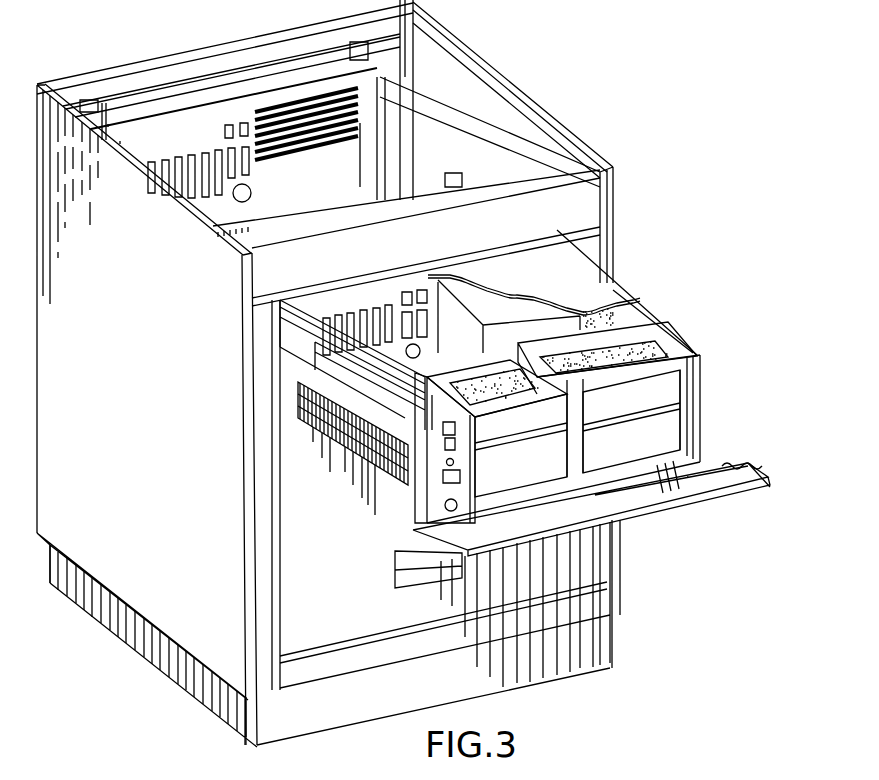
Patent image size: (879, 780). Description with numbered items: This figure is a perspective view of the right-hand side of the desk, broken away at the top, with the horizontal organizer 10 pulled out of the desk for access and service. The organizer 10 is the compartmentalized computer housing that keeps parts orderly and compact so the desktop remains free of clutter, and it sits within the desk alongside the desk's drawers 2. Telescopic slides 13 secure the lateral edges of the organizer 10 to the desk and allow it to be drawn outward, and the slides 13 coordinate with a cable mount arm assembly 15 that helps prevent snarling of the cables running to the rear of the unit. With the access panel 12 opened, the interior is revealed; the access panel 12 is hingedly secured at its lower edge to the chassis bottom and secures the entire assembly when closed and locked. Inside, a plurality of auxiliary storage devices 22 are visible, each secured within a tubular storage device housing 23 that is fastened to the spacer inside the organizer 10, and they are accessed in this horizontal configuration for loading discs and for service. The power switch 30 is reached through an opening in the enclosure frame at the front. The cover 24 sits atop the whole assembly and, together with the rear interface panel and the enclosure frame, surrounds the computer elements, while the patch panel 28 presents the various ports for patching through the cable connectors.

The organizer 10 is at (726, 422).
The access panel 12 is at (703, 503).
The telescopic slides 13 is at (352, 400).
The cable mount arm assembly 15 is at (225, 237).
The auxiliary storage devices 22 is at (693, 373).
The storage device housing 23 is at (545, 415).
The cover 24 is at (597, 302).
The patch panel 28 is at (187, 142).
The power switch 30 is at (452, 440).
The drawers 2 is at (563, 560).